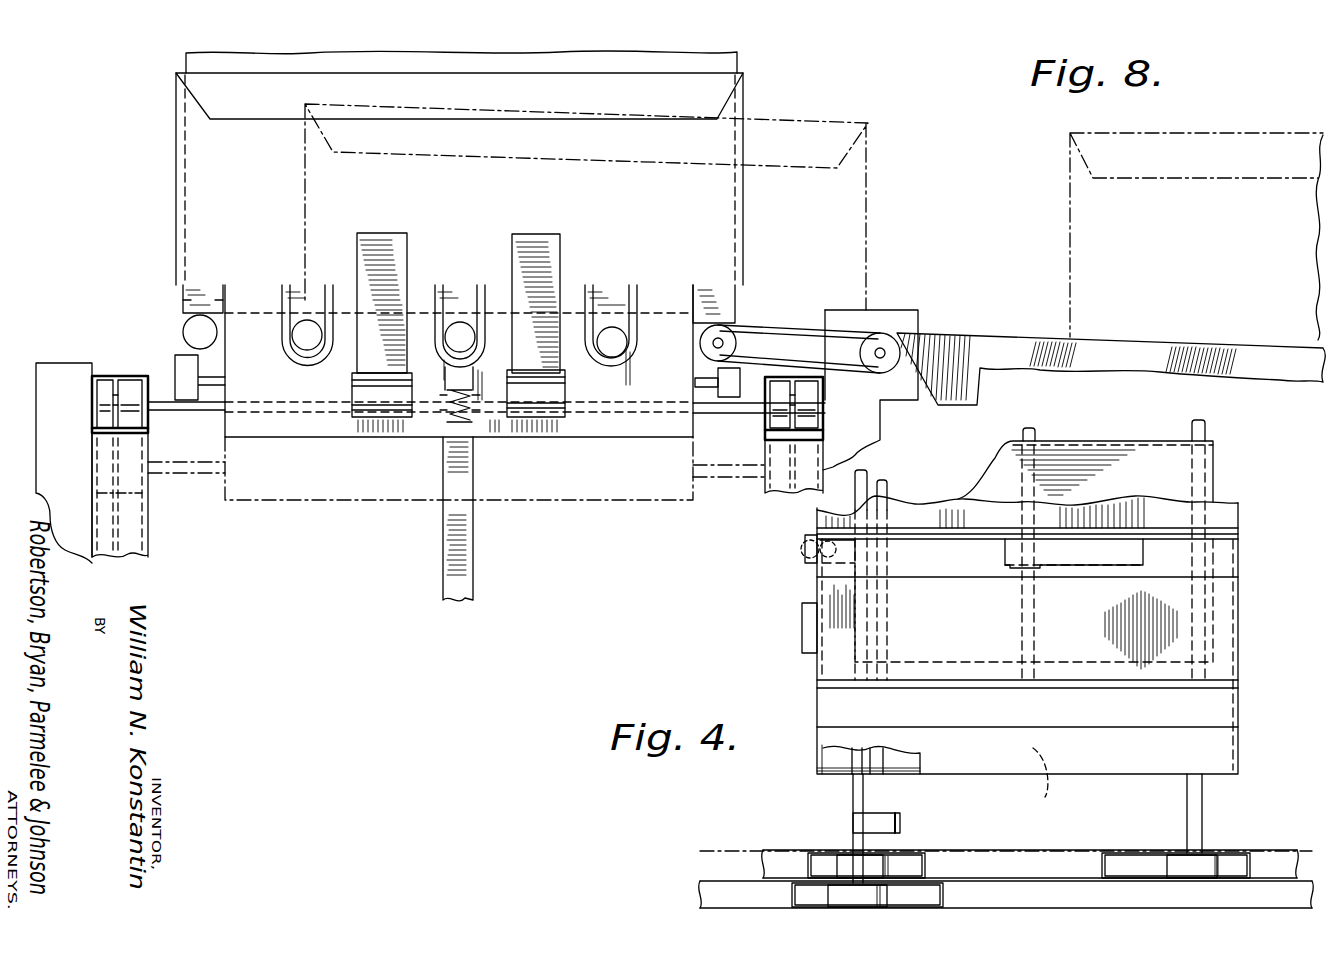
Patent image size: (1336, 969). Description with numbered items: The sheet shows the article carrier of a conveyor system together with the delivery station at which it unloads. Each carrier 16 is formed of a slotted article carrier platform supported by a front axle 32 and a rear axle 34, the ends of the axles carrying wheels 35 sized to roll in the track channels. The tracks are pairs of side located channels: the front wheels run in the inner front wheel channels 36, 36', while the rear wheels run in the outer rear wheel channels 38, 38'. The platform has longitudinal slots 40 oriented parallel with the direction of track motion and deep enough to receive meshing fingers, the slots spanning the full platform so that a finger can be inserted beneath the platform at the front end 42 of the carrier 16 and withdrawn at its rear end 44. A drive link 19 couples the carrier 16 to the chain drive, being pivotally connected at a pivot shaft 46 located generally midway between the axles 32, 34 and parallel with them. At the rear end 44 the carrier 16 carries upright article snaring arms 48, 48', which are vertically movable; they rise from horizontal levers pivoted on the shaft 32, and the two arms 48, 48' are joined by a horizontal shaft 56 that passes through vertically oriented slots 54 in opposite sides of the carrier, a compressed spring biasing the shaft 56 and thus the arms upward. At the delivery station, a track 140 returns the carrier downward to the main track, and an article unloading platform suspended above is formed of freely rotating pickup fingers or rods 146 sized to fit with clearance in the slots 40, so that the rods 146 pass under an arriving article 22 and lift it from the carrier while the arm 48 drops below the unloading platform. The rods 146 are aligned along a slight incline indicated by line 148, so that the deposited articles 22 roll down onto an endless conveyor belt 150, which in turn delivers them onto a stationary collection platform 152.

In FIG. 8, the article 22 is at (743, 95).
In FIG. 8, the carrier 16 is at (323, 438).
In FIG. 4, the carrier 16 is at (1256, 622).
In FIG. 8, the article pickup fingers or rods 146 is at (182, 335).
In FIG. 8, the longitudinal recesses or slots 40 is at (287, 348).
In FIG. 4, the longitudinal recesses or slots 40 is at (1220, 552).
In FIG. 8, the article snaring arm 48' is at (392, 318).
In FIG. 8, the article snaring arm 48 is at (536, 318).
In FIG. 4, the article snaring arm 48 is at (806, 609).
In FIG. 8, the drive link 19 is at (467, 568).
In FIG. 4, the drive link 19 is at (1077, 567).
In FIG. 8, the track 140 is at (164, 549).
In FIG. 8, the rear wheel channel 38' is at (107, 440).
In FIG. 8, the front wheel channel 36' is at (123, 386).
In FIG. 8, the line 148 is at (673, 320).
In FIG. 8, the endless conveyor belt 150 is at (803, 330).
In FIG. 8, the stationary collection platform 152 is at (970, 335).
In FIG. 8, the rear axle 34 is at (743, 415).
In FIG. 4, the rear axle 34 is at (850, 843).
In FIG. 8, the shaft 56 is at (708, 387).
In FIG. 8, the rear wheel channel 38 is at (763, 471).
In FIG. 4, the rear wheel channel 38 is at (1006, 890).
In FIG. 8, the front wheel channel 36 is at (765, 458).
In FIG. 4, the front wheel channel 36 is at (1099, 832).
In FIG. 4, the front end 42 is at (1238, 662).
In FIG. 4, the rear end 44 is at (815, 708).
In FIG. 4, the vertically oriented slots 54 is at (890, 780).
In FIG. 4, the pivot shaft 46 is at (1048, 783).
In FIG. 4, the wheels 35 is at (837, 890).
In FIG. 4, the front axle 32 is at (1202, 808).